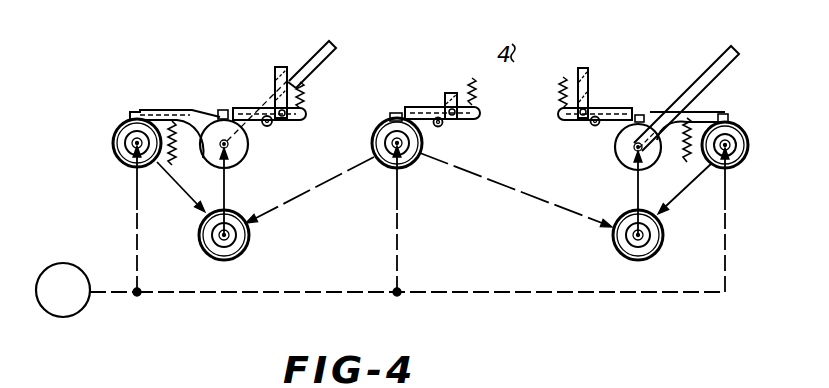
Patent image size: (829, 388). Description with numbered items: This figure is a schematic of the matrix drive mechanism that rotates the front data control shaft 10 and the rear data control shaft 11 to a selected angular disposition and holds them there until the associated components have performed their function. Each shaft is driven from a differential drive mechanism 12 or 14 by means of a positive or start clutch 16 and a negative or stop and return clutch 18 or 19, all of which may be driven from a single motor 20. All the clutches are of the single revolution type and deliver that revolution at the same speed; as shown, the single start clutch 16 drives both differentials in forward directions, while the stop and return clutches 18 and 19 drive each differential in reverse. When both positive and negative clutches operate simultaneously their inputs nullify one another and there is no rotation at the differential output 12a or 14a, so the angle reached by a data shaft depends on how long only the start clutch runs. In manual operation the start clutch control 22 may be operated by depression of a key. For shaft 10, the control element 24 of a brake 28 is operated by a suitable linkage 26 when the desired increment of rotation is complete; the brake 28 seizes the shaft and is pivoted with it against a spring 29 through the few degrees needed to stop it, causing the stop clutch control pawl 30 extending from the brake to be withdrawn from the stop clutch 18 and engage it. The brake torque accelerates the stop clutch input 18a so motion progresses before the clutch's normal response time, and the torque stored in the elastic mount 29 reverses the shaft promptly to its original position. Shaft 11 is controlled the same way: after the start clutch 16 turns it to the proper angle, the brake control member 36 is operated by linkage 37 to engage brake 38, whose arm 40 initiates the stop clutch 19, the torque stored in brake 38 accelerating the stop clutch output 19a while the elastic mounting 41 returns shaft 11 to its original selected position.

The front data control shaft 10 is at (327, 41).
The rear data control shaft 11 is at (713, 67).
The differential drive mechanism 12 is at (202, 262).
The differential output 12a is at (225, 190).
The differential drive mechanism 14 is at (611, 255).
The differential output 14a is at (637, 186).
The start clutch 16 is at (381, 143).
The stop and return clutch 18 is at (111, 166).
The stop clutch input 18a is at (183, 192).
The stop and return clutch 19 is at (748, 159).
The stop clutch output 19a is at (683, 190).
The motor 20 is at (81, 269).
The start clutch control 22 is at (420, 107).
The control element 24 is at (248, 108).
The linkage 26 is at (280, 67).
The brake 28 is at (258, 150).
The spring 29 is at (175, 158).
The stop clutch control pawl 30 is at (160, 110).
The brake control member 36 is at (616, 109).
The linkage 37 is at (588, 78).
The brake 38 is at (604, 148).
The arm 40 is at (740, 100).
The elastic mounting 41 is at (686, 163).